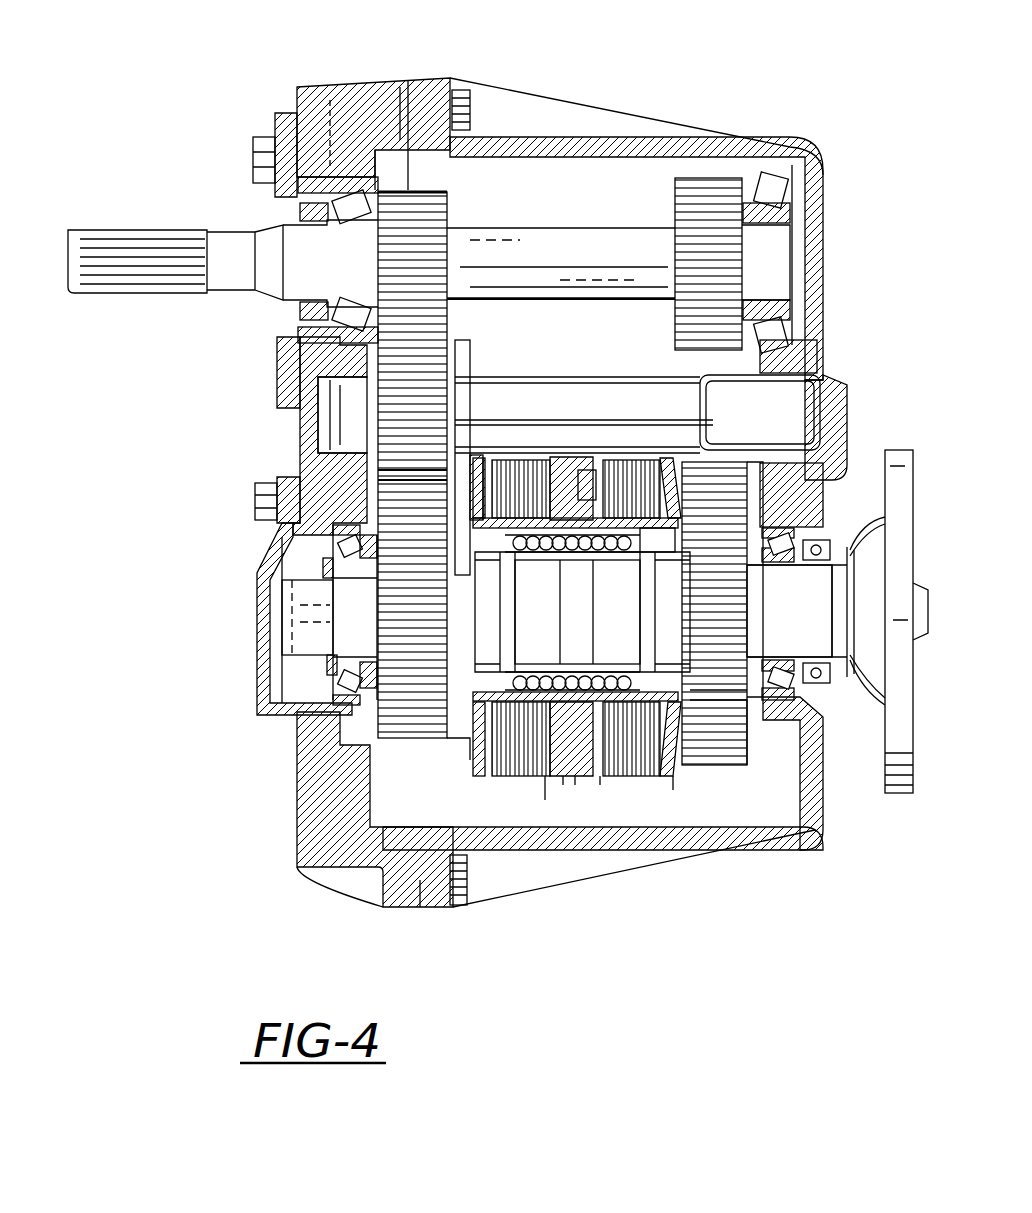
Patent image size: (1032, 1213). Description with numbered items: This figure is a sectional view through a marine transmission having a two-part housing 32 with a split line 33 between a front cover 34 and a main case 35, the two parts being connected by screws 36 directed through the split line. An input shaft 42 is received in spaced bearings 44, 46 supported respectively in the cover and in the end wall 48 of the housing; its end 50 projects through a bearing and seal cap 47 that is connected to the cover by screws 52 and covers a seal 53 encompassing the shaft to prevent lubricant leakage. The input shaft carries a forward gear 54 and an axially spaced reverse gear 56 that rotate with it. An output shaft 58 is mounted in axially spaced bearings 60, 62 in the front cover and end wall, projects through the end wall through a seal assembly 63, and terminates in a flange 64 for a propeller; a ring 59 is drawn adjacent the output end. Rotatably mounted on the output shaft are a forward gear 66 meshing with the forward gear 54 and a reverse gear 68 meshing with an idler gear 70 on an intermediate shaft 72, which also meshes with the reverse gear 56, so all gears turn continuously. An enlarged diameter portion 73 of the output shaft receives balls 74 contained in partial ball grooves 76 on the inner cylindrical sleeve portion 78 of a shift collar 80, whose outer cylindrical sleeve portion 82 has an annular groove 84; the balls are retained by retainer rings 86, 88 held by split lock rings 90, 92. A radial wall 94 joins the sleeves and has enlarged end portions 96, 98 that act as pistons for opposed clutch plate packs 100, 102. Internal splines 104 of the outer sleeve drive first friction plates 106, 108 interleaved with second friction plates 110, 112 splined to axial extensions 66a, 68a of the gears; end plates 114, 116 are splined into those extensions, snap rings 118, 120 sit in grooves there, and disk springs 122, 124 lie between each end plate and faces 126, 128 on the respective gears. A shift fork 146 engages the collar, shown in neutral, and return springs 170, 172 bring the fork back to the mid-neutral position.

The housing 32 is at (530, 86).
The split line 33 is at (406, 92).
The front cover 34 is at (313, 95).
The main case 35 is at (612, 140).
The screws 36 is at (470, 100).
The input shaft 42 is at (490, 244).
The bearing 44 is at (332, 125).
The bearing 46 is at (752, 190).
The bearing and seal cap 47 is at (277, 352).
The end wall 48 is at (818, 235).
The end 50 is at (155, 290).
The screws 52 is at (262, 140).
The seal 53 is at (305, 208).
The forward gear 54 is at (677, 190).
The reverse gear 56 is at (420, 192).
The output shaft 58 is at (808, 705).
The retaining ring 59 is at (847, 550).
The bearing 60 is at (300, 730).
The bearing 62 is at (790, 535).
The seal assembly 63 is at (832, 697).
The flange 64 is at (896, 452).
The forward gear 66 is at (722, 780).
The axial extension 66a is at (780, 468).
The reverse gear 68 is at (405, 732).
The axial extension 68a is at (483, 575).
The idler gear 70 is at (445, 378).
The intermediate shaft 72 is at (540, 456).
The enlarged diameter portion 73 is at (563, 783).
The balls 74 is at (562, 566).
The partial ball grooves 76 is at (705, 577).
The inner cylindrical sleeve portion 78 is at (493, 783).
The shift collar 80 is at (568, 455).
The outer cylindrical sleeve portion 82 is at (602, 780).
The annular groove 84 is at (575, 800).
The retainer ring 86 is at (562, 680).
The retainer ring 88 is at (718, 715).
The split lock ring 90 is at (705, 606).
The split lock ring 92 is at (467, 538).
The radial wall 94 is at (592, 552).
The end portion 96 is at (612, 780).
The end portion 98 is at (540, 470).
The clutch plate pack 100 is at (675, 790).
The clutch plate pack 102 is at (418, 897).
The internal splines 104 is at (690, 462).
The first friction plates 106 is at (625, 455).
The first friction plates 108 is at (472, 458).
The second friction plates 110 is at (612, 665).
The second friction plates 112 is at (495, 470).
The end plate 114 is at (737, 822).
The end plate 116 is at (478, 470).
The snap ring 118 is at (690, 500).
The snap ring 120 is at (480, 524).
The disk spring 122 is at (740, 760).
The disk spring 124 is at (468, 772).
The face 126 is at (673, 540).
The face 128 is at (352, 484).
The shift fork 146 is at (585, 458).
The return spring 170 is at (605, 462).
The return spring 172 is at (540, 780).